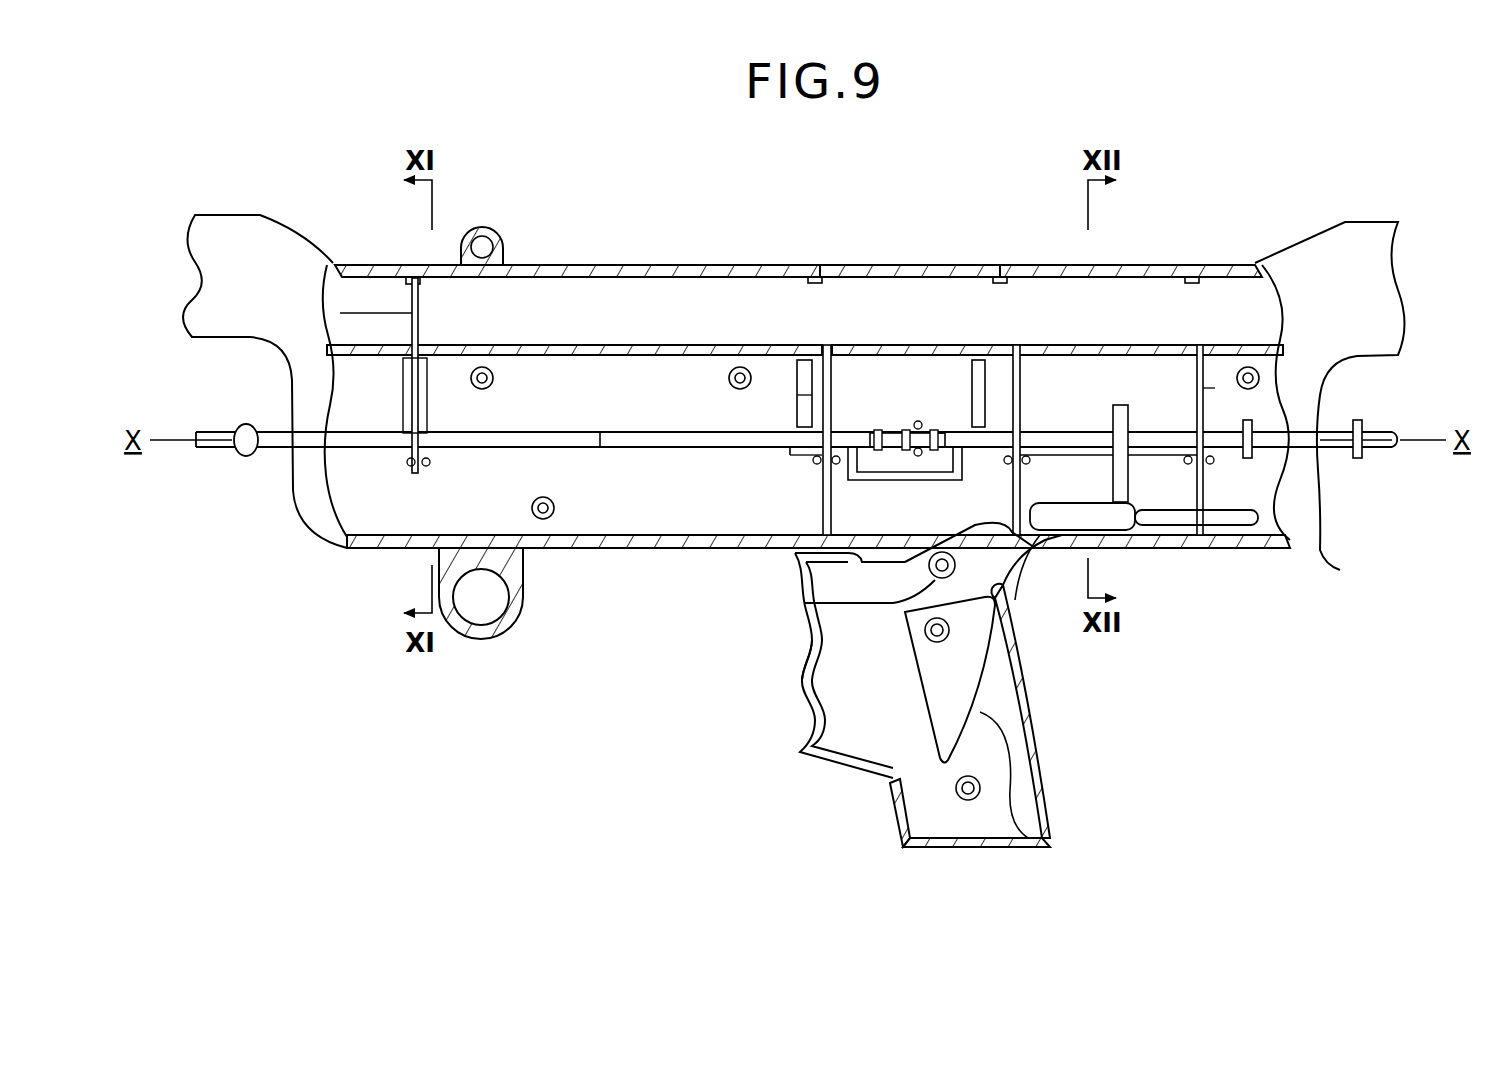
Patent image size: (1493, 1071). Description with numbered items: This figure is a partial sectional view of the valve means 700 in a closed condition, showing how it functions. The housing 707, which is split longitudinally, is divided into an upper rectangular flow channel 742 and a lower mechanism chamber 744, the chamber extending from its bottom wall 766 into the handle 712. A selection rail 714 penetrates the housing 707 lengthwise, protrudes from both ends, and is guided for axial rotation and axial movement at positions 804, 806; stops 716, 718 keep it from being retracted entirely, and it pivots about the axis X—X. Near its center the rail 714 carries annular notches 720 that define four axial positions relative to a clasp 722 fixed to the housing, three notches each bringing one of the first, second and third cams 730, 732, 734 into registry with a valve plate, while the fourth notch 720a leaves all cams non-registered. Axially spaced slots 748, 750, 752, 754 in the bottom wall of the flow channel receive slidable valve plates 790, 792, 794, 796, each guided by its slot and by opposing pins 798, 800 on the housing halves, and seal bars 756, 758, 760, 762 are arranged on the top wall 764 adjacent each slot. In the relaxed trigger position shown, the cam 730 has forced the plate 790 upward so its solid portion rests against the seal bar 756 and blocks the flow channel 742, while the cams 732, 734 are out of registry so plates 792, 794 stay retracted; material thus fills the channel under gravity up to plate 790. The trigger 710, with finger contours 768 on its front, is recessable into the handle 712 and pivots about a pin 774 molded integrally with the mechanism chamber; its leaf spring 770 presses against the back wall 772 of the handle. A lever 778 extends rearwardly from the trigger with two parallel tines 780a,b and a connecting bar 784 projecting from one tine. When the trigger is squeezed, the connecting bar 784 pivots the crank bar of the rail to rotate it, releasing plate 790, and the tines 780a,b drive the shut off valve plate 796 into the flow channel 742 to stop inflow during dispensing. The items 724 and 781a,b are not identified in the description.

The valve means 700 is at (918, 256).
The housing 707 is at (630, 266).
The trigger 710 is at (800, 740).
The handle 712 is at (1008, 697).
The selection rail 714 is at (1392, 455).
The stop 716 is at (1250, 458).
The stop 718 is at (1357, 458).
The annular notches 720 is at (873, 432).
The fourth notch 720a is at (940, 432).
The clasp 722 is at (918, 421).
The divider plate 724 is at (800, 520).
The first cam 730 is at (428, 398).
The second cam 732 is at (797, 395).
The third cam 734 is at (1010, 415).
The upper rectangular flow channel 742 is at (690, 318).
The mechanism chamber 744 is at (752, 345).
The slot 748 is at (425, 345).
The slot 750 is at (803, 360).
The slot 752 is at (1020, 340).
The slot 754 is at (1200, 345).
The seal bar 756 is at (393, 265).
The seal bar 758 is at (824, 262).
The seal bar 760 is at (998, 272).
The seal bar 762 is at (1245, 263).
The top wall 764 is at (493, 262).
The bottom wall 766 is at (1240, 545).
The finger contours 768 is at (803, 655).
The leaf spring 770 is at (1042, 825).
The back wall 772 is at (1003, 702).
The pin 774 is at (905, 598).
The lever 778 is at (1190, 545).
The tines 780a,b is at (1250, 520).
The link 781a,b is at (1035, 560).
The connecting bar 784 is at (1128, 412).
The valve plate 790 is at (340, 313).
The valve plate 792 is at (805, 432).
The valve plate 794 is at (1013, 490).
The shut off valve plate 796 is at (1200, 388).
The pin 798 is at (410, 466).
The pin 800 is at (428, 466).
The position 804 is at (300, 450).
The position 806 is at (1352, 428).